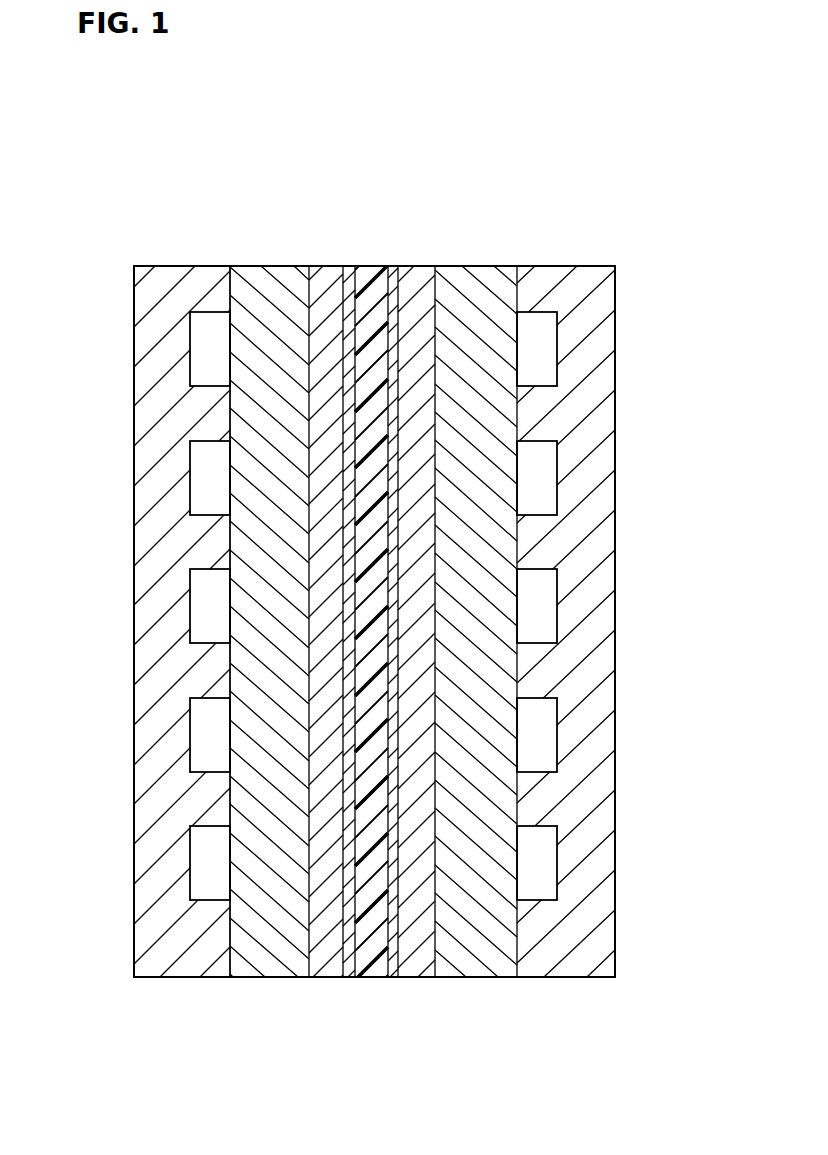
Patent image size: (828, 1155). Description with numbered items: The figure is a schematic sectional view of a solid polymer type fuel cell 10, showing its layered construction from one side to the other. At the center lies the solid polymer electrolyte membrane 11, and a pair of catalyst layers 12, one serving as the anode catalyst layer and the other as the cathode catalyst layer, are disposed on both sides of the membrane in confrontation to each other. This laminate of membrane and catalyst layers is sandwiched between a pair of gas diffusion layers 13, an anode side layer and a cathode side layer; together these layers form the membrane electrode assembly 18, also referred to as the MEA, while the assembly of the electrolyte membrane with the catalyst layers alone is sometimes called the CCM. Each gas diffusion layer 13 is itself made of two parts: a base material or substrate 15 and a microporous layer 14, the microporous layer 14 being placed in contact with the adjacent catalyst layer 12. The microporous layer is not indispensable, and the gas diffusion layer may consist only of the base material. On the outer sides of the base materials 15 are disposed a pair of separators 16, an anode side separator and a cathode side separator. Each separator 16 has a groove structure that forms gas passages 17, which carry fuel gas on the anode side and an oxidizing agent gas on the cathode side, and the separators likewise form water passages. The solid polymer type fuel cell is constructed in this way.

The solid polymer type fuel cell 10 is at (87, 205).
The solid polymer electrolyte membrane 11 is at (373, 978).
The catalyst layer 12 is at (402, 978).
The gas diffusion layer 13 is at (228, 259).
The microporous layer 14 is at (330, 978).
The base material 15 is at (277, 978).
The separator 16 is at (187, 978).
The gas passage 17 is at (545, 477).
The membrane electrode assembly 18 is at (228, 207).